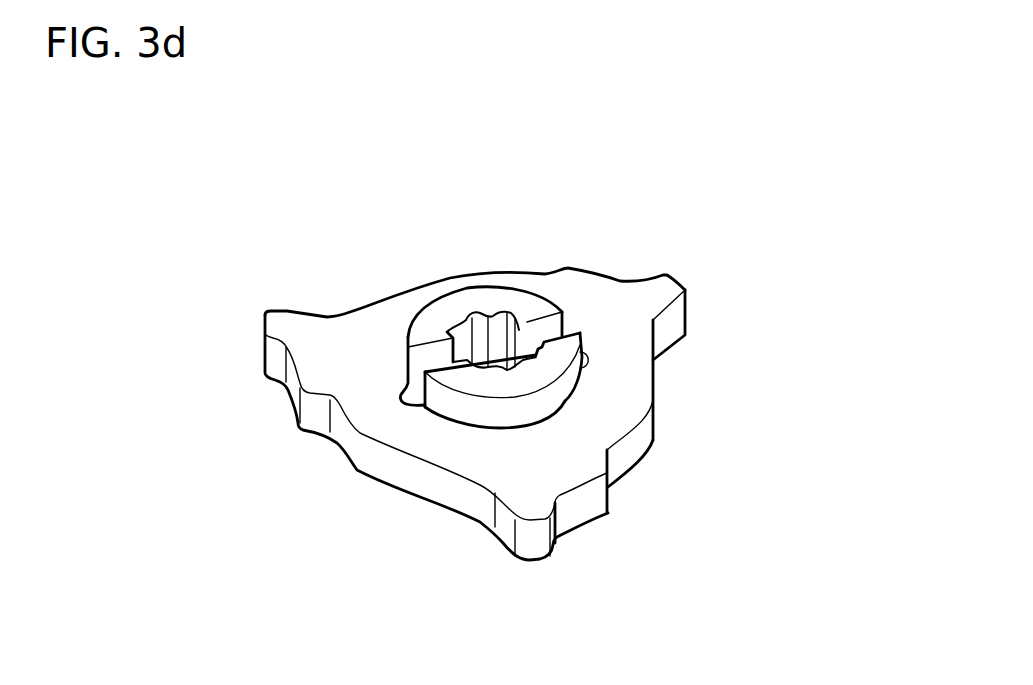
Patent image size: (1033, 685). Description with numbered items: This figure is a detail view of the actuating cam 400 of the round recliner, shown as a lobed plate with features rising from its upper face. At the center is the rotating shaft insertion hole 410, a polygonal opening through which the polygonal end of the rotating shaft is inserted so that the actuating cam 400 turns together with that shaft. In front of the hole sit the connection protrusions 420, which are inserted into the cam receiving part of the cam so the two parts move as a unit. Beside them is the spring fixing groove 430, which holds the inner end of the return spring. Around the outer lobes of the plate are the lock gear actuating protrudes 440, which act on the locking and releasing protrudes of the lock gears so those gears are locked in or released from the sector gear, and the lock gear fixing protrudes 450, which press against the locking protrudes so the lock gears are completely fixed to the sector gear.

The actuating cam 400 is at (328, 294).
The rotating shaft insertion hole 410 is at (485, 322).
The connection protrusions 420 is at (473, 410).
The spring fixing groove 430 is at (428, 357).
The lock gear actuating protrudes 440 is at (658, 290).
The lock gear fixing protrudes 450 is at (573, 272).